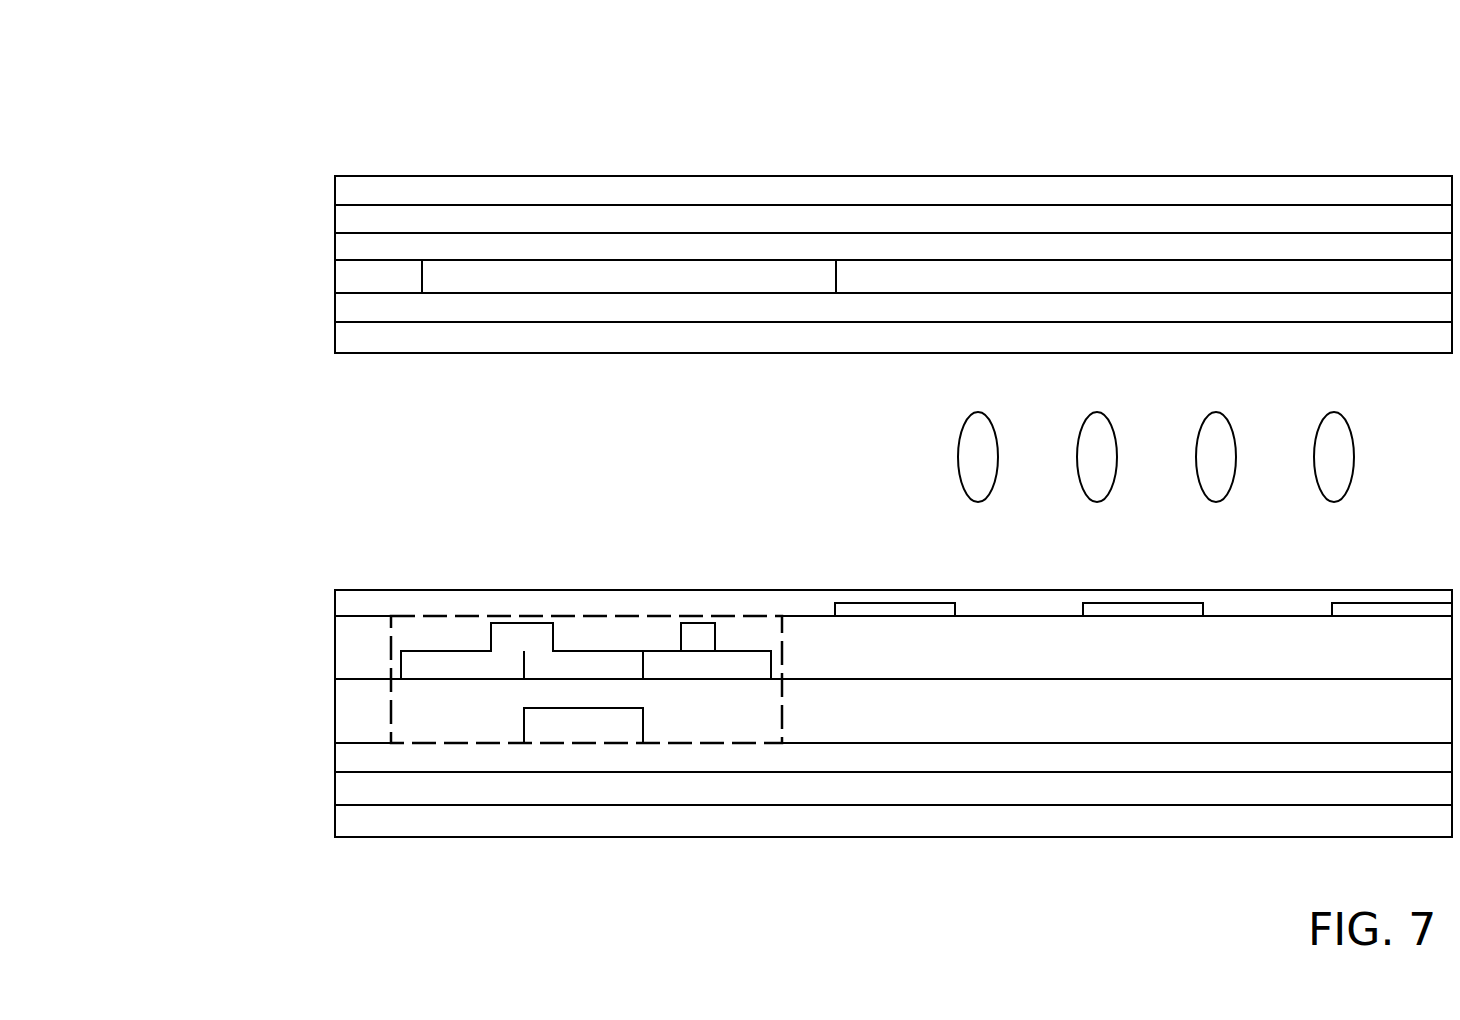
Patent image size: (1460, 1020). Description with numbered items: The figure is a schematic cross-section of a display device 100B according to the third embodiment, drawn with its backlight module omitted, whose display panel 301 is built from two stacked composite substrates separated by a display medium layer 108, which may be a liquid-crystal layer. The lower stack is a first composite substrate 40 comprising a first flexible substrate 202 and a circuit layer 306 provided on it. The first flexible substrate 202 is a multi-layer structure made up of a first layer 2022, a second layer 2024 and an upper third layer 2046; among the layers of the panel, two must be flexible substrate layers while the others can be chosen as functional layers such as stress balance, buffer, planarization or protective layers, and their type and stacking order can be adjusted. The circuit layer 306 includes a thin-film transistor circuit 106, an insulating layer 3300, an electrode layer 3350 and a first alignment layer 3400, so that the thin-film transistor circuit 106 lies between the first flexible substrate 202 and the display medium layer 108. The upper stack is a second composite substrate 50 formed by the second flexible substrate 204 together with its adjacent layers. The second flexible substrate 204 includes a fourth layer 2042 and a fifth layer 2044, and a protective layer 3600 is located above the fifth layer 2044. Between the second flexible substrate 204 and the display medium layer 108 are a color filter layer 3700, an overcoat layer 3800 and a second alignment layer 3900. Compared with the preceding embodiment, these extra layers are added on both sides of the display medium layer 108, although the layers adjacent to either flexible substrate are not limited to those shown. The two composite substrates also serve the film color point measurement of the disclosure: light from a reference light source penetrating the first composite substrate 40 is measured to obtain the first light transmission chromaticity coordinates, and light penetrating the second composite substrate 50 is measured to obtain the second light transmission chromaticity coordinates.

The display device 100B is at (157, 88).
The display panel 301 is at (207, 165).
The second composite substrate 50 is at (153, 177).
The protective layer 3600 is at (378, 191).
The second flexible substrate 204 is at (218, 213).
The fifth layer 2044 is at (378, 217).
The fourth layer 2042 is at (378, 244).
The color filter layer 3700 is at (378, 272).
The overcoat layer 3800 is at (378, 302).
The second alignment layer 3900 is at (378, 334).
The display medium layer 108 is at (421, 456).
The first composite substrate 40 is at (154, 643).
The circuit layer 306 is at (220, 592).
The first alignment layer 3400 is at (378, 602).
The electrode layer 3350 is at (857, 613).
The insulating layer 3300 is at (378, 663).
The thin-film transistor circuit 106 is at (392, 727).
The first flexible substrate 202 is at (220, 743).
The polarizer layer 2046 is at (378, 756).
The second layer 2024 is at (378, 787).
The first layer 2022 is at (378, 819).